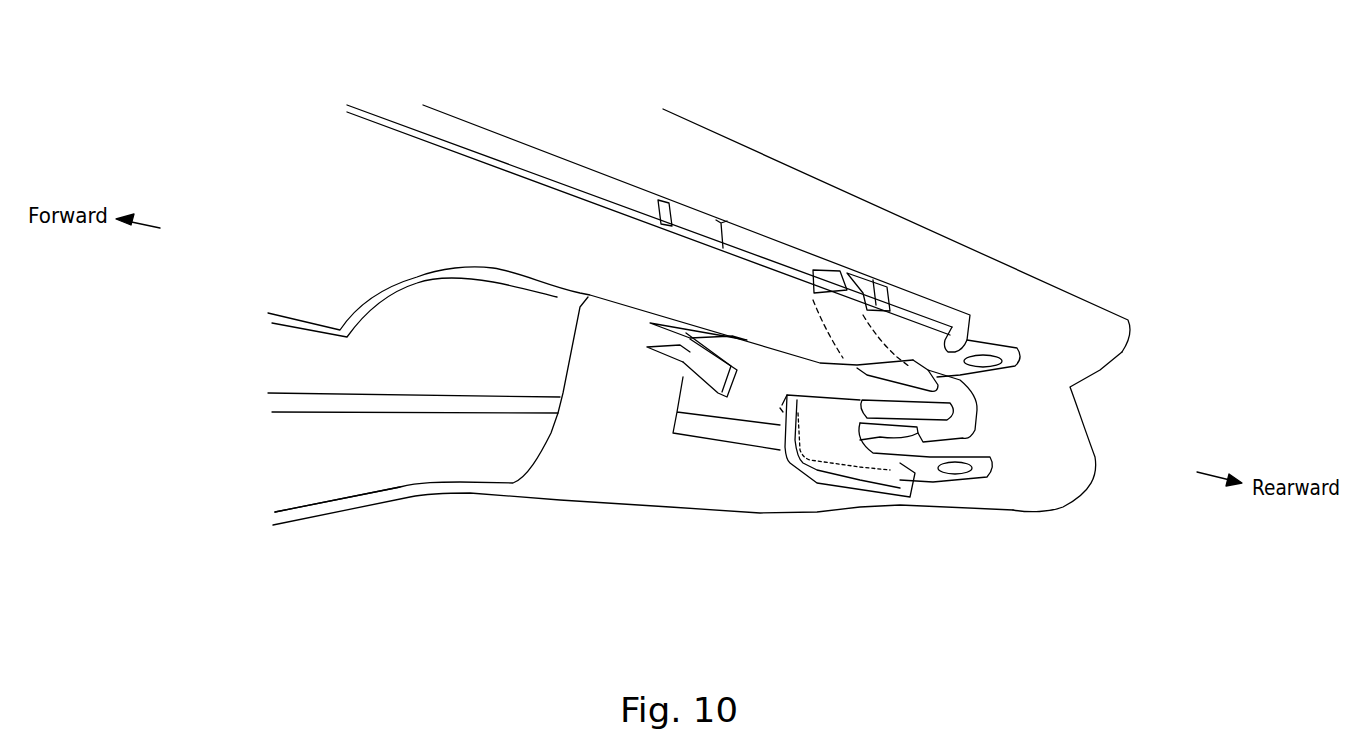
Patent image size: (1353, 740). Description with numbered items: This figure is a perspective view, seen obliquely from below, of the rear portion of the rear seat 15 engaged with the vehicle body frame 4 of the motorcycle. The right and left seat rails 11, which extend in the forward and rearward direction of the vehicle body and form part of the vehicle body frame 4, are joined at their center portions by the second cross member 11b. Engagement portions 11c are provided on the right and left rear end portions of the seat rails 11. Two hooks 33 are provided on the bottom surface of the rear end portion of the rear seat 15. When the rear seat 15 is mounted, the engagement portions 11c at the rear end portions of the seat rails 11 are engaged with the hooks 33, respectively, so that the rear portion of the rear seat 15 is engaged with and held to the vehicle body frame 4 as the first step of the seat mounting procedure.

The vehicle body frame 4 is at (434, 540).
The seat rails 11 is at (408, 257).
The second cross member 11b is at (602, 343).
The engagement portions 11c is at (900, 440).
The rear seat 15 is at (820, 160).
The hooks 33 is at (873, 362).